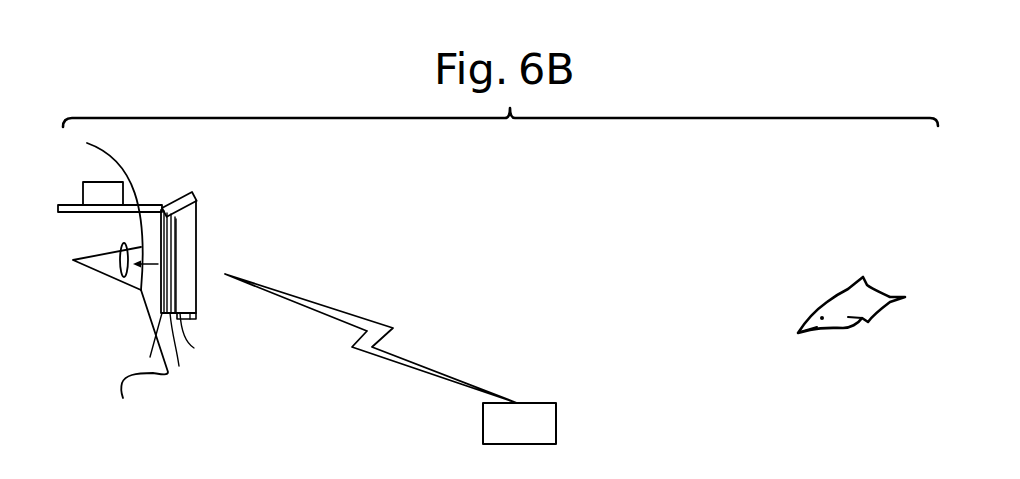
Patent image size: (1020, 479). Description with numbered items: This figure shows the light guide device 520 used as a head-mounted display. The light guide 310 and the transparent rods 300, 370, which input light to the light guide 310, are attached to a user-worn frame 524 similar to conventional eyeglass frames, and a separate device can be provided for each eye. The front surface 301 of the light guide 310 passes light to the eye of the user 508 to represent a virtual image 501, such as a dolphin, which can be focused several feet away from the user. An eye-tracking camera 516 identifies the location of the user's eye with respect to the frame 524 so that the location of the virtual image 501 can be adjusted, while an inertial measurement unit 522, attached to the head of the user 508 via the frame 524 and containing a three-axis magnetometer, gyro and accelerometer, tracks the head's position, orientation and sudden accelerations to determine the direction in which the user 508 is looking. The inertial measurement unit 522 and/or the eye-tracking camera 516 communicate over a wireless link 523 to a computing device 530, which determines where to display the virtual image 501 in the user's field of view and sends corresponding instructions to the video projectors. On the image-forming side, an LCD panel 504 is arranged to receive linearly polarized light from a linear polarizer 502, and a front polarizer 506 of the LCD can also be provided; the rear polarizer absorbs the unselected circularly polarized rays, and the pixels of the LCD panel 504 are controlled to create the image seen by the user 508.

The transparent rod 300 is at (204, 339).
The front surface 301 is at (177, 290).
The light guide 310 is at (197, 230).
The transparent rod 370 is at (197, 318).
The virtual image 501 is at (887, 291).
The linear polarizer 502 is at (165, 344).
The LCD panel 504 is at (136, 340).
The front polarizer 506 is at (160, 320).
The user 508 is at (119, 164).
The eye-tracking camera 516 is at (187, 190).
The light guide device 520 is at (232, 216).
The inertial measurement unit 522 is at (84, 181).
The wireless link 523 is at (340, 305).
The user-worn frame 524 is at (110, 217).
The computing device 530 is at (519, 423).